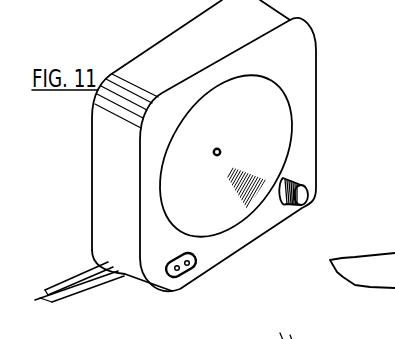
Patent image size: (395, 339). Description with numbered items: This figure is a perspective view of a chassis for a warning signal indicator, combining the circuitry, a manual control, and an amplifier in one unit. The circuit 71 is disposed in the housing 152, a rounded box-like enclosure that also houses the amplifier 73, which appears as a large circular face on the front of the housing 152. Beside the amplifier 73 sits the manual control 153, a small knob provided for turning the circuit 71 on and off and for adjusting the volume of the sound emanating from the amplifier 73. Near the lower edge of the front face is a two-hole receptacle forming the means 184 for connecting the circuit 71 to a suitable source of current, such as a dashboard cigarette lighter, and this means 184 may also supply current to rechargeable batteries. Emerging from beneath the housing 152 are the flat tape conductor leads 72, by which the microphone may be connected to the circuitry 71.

The circuitry 71 is at (82, 163).
The housing 152 is at (103, 202).
The amplifier 73 is at (215, 220).
The manual control 153 is at (305, 193).
The means for connecting the circuit to a source of current 184 is at (185, 273).
The flat tape conductor leads 72 is at (80, 282).